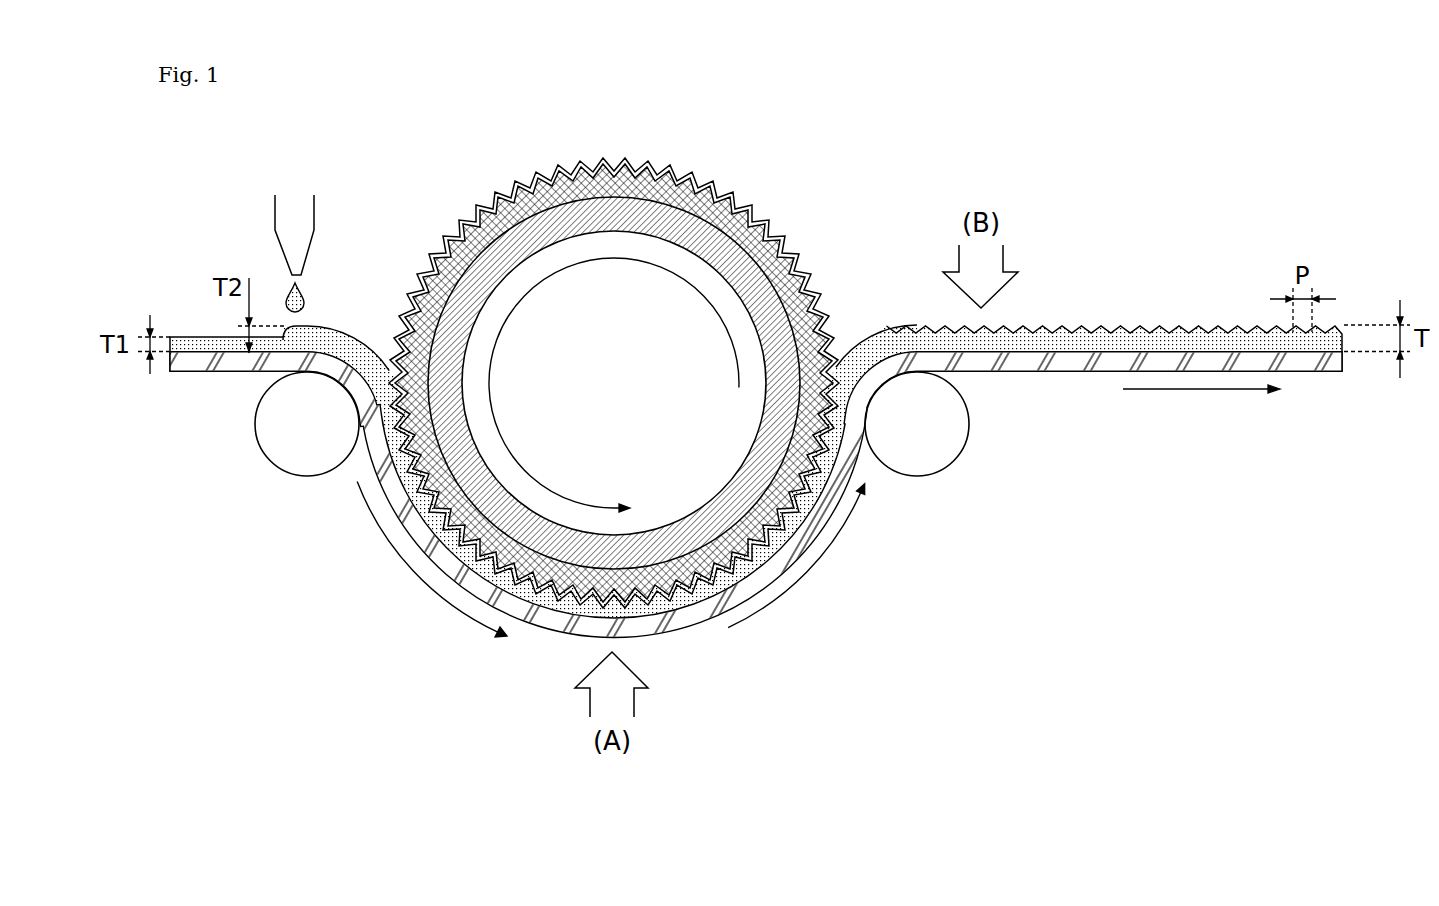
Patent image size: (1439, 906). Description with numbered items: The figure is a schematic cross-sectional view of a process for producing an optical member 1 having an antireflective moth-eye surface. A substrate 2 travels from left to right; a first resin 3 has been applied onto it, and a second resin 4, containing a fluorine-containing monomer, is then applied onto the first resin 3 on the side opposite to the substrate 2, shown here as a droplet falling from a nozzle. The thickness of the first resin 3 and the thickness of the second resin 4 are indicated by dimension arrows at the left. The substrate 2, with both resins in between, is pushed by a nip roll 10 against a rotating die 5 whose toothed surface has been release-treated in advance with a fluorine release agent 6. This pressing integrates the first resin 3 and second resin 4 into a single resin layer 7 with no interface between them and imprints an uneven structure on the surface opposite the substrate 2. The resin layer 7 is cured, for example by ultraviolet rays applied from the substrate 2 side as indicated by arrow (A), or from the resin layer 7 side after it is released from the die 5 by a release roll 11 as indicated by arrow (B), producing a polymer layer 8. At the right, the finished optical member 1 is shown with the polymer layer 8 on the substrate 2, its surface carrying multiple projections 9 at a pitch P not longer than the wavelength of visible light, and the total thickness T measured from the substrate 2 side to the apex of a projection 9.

The optical member 1 is at (1259, 313).
The substrate 2 is at (198, 364).
The first resin 3 is at (196, 341).
The second resin 4 is at (357, 337).
The die 5 is at (748, 208).
The fluorine release agent 6 is at (790, 252).
The resin layer 7 is at (545, 606).
The polymer layer 8 is at (1338, 343).
The projections 9 is at (1334, 323).
The nip roll 10 is at (287, 455).
The release roll 11 is at (938, 453).